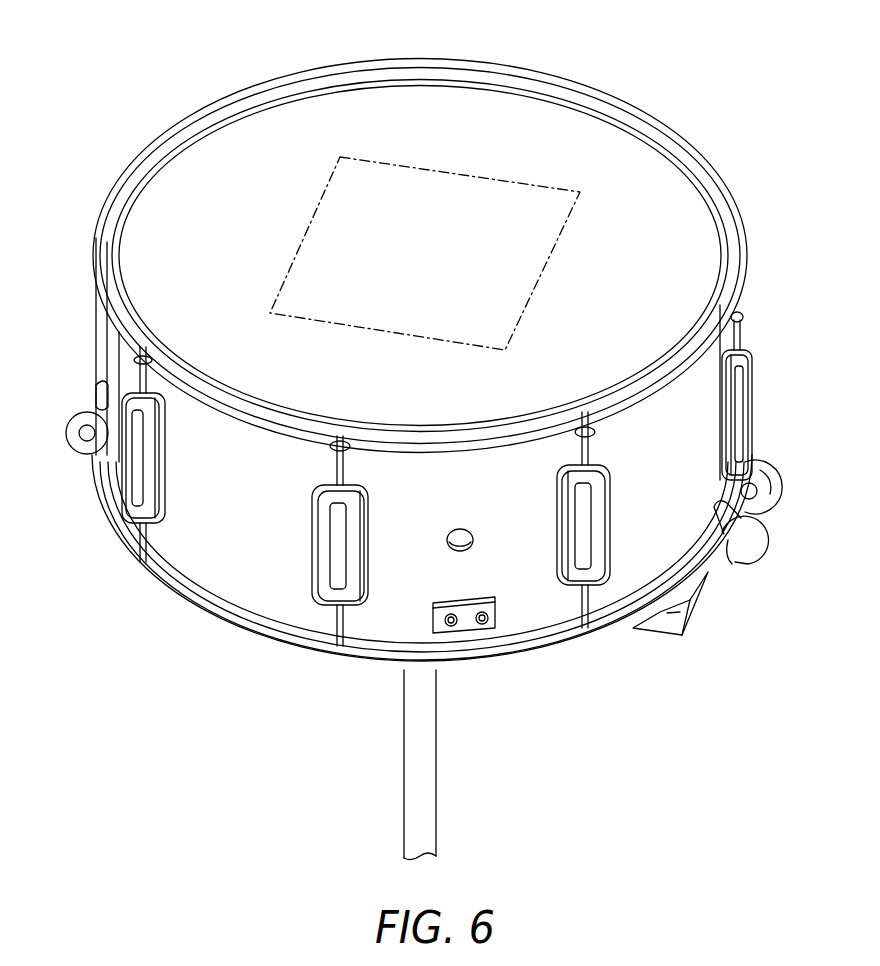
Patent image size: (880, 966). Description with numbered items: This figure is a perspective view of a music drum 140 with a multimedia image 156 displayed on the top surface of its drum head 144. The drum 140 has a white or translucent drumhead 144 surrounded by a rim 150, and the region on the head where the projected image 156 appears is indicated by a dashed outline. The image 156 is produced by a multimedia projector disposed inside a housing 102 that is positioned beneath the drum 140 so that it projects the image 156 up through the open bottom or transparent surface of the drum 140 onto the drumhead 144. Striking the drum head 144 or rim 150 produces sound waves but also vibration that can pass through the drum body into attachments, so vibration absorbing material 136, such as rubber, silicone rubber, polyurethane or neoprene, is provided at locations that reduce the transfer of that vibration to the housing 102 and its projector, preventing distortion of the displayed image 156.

The housing 102 is at (663, 626).
The vibration absorbing material 136 is at (748, 538).
The music drum 140 is at (755, 320).
The drum head 144 is at (616, 152).
The rim 150 is at (130, 171).
The multimedia image 156 is at (398, 160).